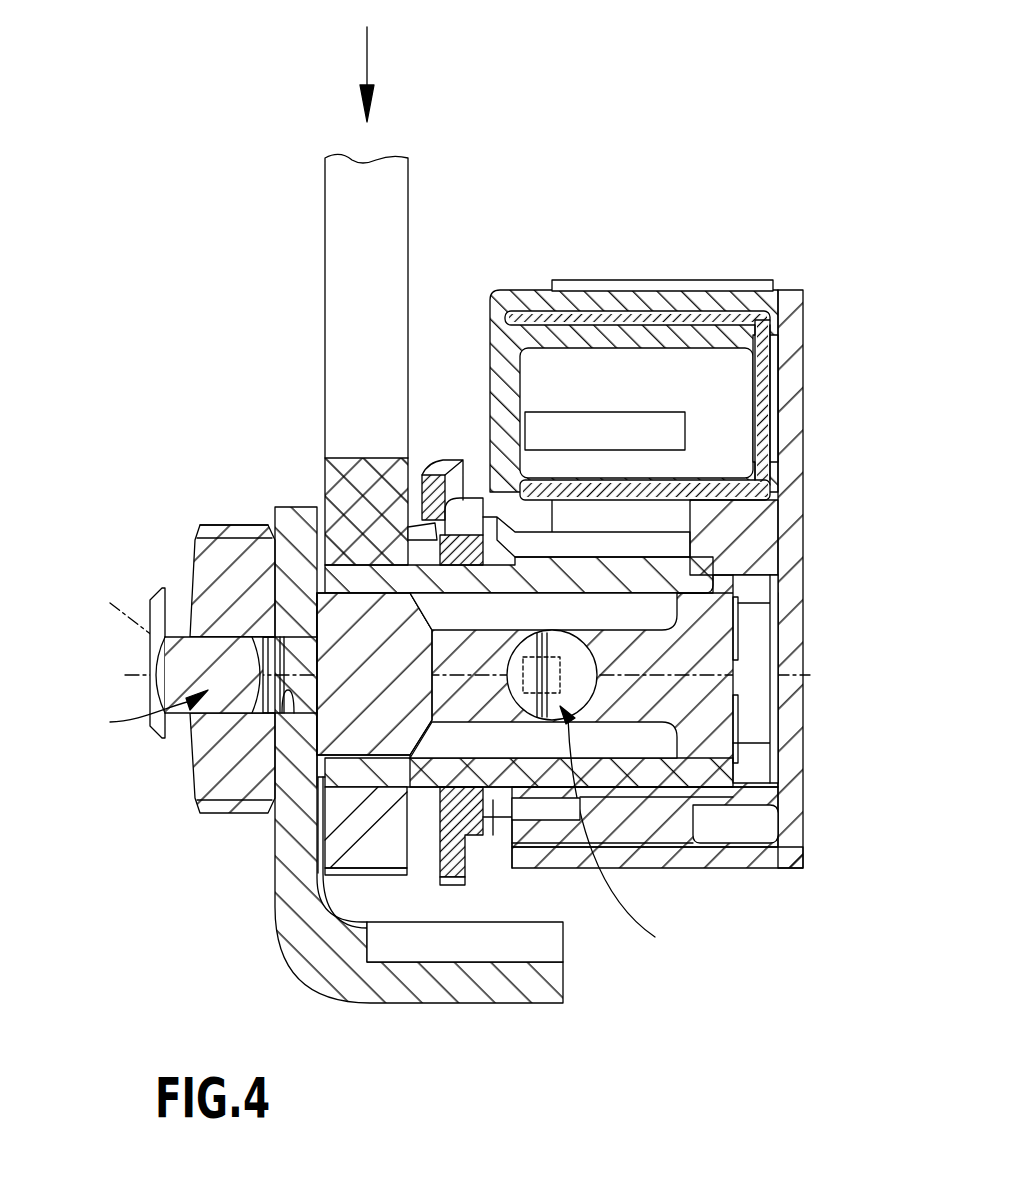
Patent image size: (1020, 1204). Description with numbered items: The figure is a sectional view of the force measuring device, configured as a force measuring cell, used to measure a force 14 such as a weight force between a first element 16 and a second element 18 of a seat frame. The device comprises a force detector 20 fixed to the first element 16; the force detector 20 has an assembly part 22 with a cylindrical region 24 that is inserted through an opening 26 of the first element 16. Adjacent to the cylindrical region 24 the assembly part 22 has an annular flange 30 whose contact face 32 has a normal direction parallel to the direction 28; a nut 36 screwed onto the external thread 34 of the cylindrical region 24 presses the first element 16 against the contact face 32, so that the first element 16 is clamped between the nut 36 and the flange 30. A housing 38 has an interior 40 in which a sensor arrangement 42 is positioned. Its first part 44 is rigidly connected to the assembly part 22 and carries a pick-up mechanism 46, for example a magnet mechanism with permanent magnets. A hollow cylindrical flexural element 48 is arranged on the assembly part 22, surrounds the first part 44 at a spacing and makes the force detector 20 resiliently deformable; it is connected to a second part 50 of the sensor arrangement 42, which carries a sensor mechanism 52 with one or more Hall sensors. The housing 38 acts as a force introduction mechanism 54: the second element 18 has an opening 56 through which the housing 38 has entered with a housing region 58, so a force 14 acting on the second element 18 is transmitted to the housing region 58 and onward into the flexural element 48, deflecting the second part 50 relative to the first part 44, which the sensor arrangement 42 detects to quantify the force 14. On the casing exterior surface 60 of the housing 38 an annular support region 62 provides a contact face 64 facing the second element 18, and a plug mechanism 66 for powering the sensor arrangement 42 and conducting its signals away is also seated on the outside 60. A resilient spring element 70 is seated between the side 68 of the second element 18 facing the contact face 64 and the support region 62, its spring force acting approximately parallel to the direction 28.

The force 14 is at (367, 55).
The first element 16 is at (287, 897).
The second element 18 is at (392, 200).
The force detector 20 is at (155, 738).
The assembly part 22 is at (177, 660).
The cylindrical region 24 is at (140, 716).
The opening 26 is at (278, 700).
The direction 28 is at (136, 627).
The annular flange 30 is at (220, 572).
The contact face 32 is at (302, 742).
The external thread 34 is at (203, 625).
The nut 36 is at (195, 575).
The housing 38 is at (677, 775).
The interior 40 is at (738, 607).
The sensor arrangement 42 is at (621, 835).
The first part 44 is at (520, 704).
The pick-up mechanism 46 is at (530, 655).
The flexural element 48 is at (620, 640).
The second part 50 is at (557, 663).
The sensor mechanism 52 is at (558, 683).
The force introduction mechanism 54 is at (385, 585).
The opening 56 is at (345, 590).
The housing region 58 is at (385, 565).
The casing exterior surface 60 is at (467, 498).
The support region 62 is at (523, 810).
The contact face 64 is at (465, 813).
The plug mechanism 66 is at (655, 312).
The side 68 is at (412, 805).
The spring element 70 is at (435, 473).